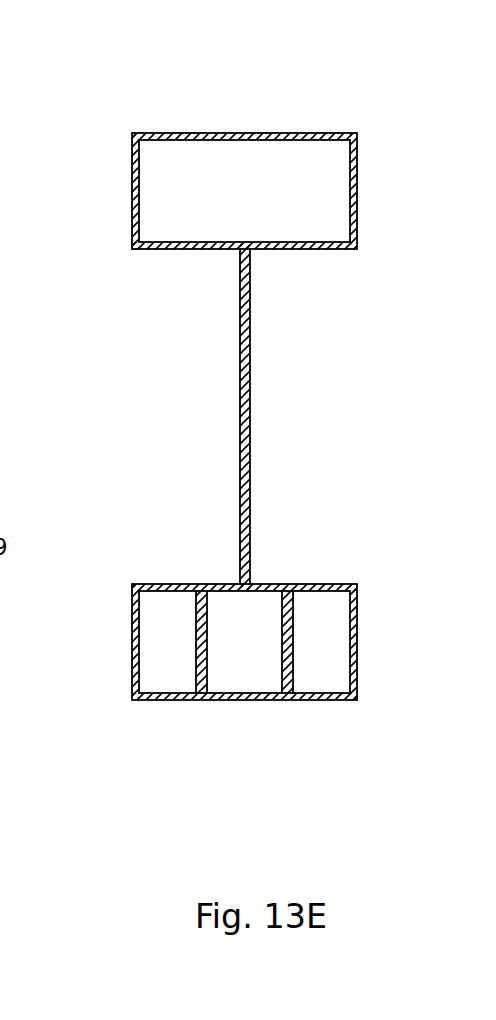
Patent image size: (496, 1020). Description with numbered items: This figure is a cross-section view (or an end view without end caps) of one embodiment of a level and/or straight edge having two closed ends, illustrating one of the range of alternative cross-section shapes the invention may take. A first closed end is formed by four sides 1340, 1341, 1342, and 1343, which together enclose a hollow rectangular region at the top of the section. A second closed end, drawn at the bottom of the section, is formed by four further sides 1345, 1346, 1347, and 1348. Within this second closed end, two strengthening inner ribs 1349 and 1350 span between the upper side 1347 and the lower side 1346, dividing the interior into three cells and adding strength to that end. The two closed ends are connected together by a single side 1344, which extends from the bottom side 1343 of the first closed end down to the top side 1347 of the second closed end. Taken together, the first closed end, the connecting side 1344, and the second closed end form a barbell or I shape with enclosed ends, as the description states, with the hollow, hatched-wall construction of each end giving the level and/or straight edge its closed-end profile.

The side 1340 is at (242, 186).
The side 1341 is at (277, 133).
The side 1342 is at (132, 138).
The side 1343 is at (160, 249).
The side 1344 is at (240, 367).
The side 1345 is at (264, 695).
The side 1346 is at (305, 695).
The side 1347 is at (327, 584).
The side 1348 is at (132, 680).
The strengthening inner rib 1349 is at (293, 645).
The strengthening inner rib 1350 is at (199, 647).